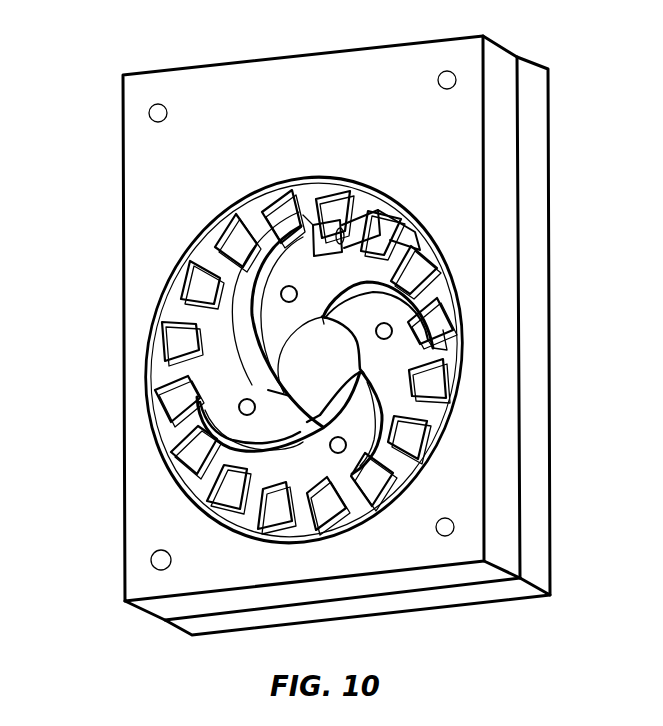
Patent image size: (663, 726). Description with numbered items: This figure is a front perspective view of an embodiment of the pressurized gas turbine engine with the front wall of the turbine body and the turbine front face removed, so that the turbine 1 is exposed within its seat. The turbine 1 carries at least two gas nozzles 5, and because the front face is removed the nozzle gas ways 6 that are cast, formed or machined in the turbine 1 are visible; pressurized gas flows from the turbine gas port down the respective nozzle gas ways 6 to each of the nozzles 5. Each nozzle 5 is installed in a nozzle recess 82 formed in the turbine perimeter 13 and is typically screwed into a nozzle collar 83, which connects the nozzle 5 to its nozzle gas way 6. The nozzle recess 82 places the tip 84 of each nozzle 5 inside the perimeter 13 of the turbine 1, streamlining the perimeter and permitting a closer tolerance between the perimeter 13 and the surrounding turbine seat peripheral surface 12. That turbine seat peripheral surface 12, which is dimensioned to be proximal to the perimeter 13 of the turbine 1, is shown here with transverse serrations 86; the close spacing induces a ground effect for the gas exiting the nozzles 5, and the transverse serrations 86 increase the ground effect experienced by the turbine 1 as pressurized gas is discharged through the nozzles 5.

The turbine 1 is at (398, 418).
The gas nozzle 5 is at (318, 222).
The nozzle gas way 6 is at (243, 302).
The turbine seat peripheral surface 12 is at (183, 345).
The perimeter 13 is at (210, 394).
The nozzle recess 82 is at (384, 226).
The nozzle collar 83 is at (318, 212).
The tip 84 is at (348, 206).
The transverse serrations 86 is at (196, 478).